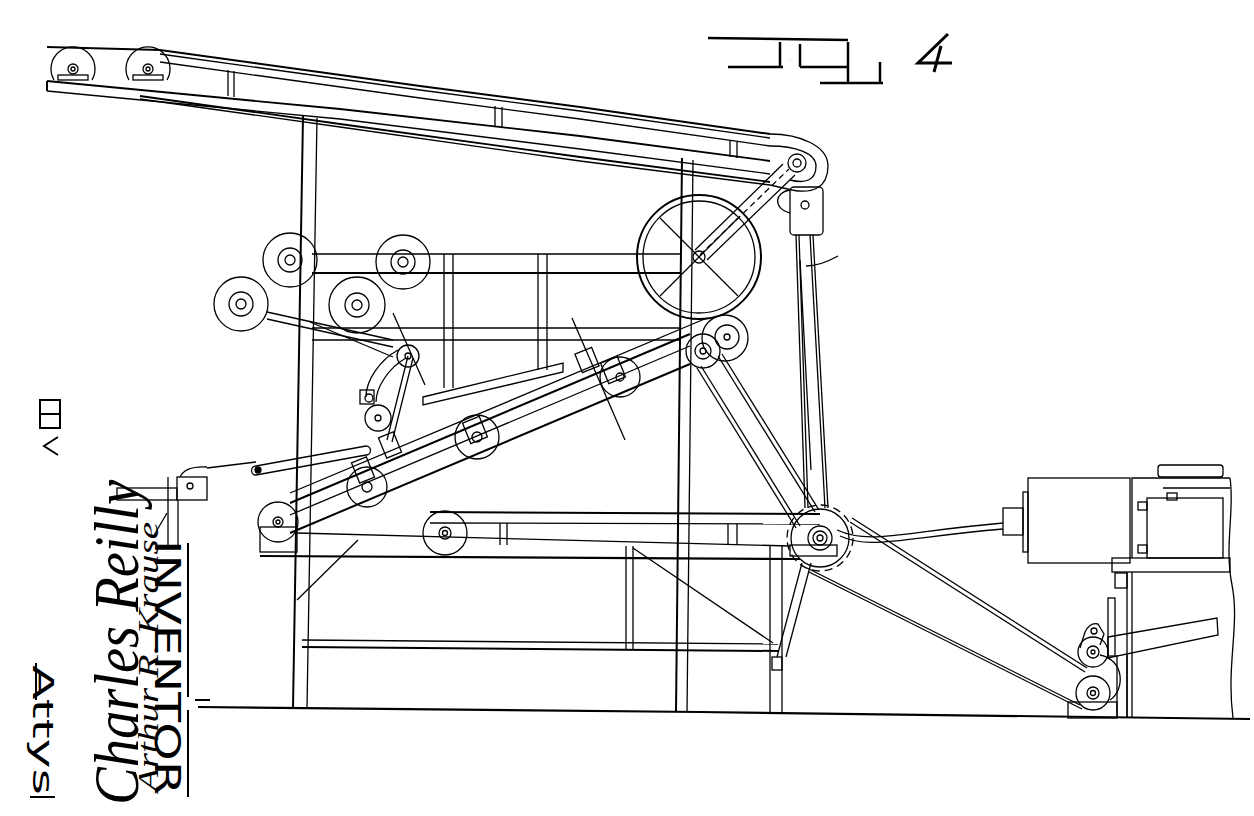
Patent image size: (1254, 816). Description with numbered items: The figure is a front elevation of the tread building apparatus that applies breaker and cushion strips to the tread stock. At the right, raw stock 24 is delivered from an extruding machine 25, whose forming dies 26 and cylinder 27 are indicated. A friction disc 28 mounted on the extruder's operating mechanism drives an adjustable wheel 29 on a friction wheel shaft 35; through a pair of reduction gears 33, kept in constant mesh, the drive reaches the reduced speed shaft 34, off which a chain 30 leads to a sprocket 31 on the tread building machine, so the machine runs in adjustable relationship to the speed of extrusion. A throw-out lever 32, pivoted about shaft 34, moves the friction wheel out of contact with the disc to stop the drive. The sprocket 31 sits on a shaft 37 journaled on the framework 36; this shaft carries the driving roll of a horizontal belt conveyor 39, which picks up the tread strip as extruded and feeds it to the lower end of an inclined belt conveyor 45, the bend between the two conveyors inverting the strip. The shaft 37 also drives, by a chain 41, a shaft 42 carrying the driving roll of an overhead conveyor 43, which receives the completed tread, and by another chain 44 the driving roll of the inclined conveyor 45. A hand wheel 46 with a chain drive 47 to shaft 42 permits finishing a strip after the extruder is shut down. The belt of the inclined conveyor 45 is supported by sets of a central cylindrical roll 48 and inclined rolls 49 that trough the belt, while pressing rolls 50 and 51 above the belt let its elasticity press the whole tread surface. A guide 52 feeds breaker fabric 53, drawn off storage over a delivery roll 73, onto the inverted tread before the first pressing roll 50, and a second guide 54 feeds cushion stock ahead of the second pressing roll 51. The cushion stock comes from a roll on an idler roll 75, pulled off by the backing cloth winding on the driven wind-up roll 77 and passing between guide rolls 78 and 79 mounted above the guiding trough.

The raw stock 24 is at (913, 535).
The extruding machine 25 is at (1180, 532).
The forming dies 26 is at (1012, 513).
The cylinder 27 is at (1067, 498).
The friction disc 28 is at (1108, 606).
The adjustable wheel 29 is at (1087, 646).
The chain 30 is at (1022, 670).
The sprocket 31 is at (842, 528).
The throw-out lever 32 is at (1174, 632).
The reduction gears 33 is at (1087, 681).
The reduced speed shaft 34 is at (1114, 694).
The friction wheel shaft 35 is at (1077, 643).
The framework 36 is at (314, 206).
The shaft 37 is at (824, 532).
The horizontal belt conveyor 39 is at (602, 512).
The chain 41 is at (814, 279).
The shaft 42 is at (806, 164).
The overhead conveyor 43 is at (588, 122).
The chain 44 is at (754, 408).
The inclined belt conveyor 45 is at (540, 400).
The hand wheel 46 is at (642, 230).
The chain drive 47 is at (812, 204).
The central cylindrical roll 48 is at (495, 432).
The inclined rolls 49 is at (400, 512).
The pressing roll 50 is at (391, 440).
The pressing roll 51 is at (602, 348).
The guide 52 is at (281, 452).
The breaker fabric 53 is at (233, 466).
The second guide 54 is at (488, 384).
The delivery roll 73 is at (212, 478).
The idler roll 75 is at (294, 257).
The wind-up roll 77 is at (357, 292).
The guide roll 78 is at (365, 418).
The guide roll 79 is at (362, 397).